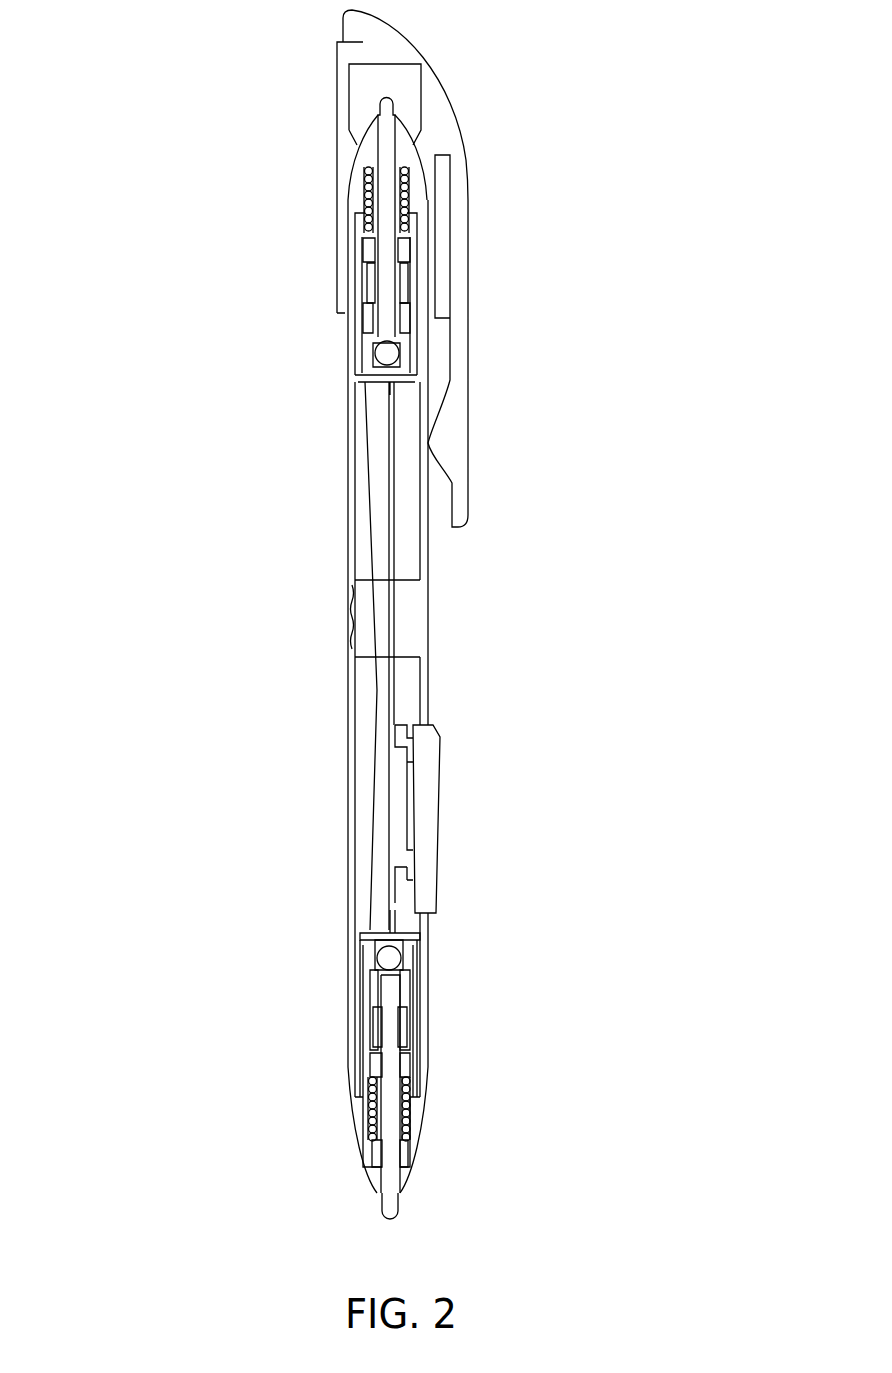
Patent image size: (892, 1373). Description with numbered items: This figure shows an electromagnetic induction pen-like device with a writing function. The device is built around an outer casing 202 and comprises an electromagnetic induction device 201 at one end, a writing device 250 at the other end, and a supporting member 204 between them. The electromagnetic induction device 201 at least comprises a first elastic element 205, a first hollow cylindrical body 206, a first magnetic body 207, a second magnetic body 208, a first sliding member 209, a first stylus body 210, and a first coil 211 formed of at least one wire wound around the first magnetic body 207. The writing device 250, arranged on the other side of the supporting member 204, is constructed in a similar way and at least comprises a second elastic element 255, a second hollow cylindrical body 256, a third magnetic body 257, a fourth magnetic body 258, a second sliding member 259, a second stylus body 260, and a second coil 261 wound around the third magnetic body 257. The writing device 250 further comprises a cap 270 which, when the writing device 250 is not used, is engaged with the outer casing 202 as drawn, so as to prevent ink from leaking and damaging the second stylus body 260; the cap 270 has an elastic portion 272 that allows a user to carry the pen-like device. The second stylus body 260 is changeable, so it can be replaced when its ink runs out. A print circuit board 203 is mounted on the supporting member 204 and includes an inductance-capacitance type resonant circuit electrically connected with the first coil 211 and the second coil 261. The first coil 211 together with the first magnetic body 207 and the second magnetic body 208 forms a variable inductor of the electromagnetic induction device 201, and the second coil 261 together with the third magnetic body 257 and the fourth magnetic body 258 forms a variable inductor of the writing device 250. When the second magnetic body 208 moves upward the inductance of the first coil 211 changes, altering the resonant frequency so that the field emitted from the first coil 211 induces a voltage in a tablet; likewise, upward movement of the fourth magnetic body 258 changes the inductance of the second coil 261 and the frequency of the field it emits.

The electromagnetic induction device 201 is at (618, 953).
The outer casing 202 is at (348, 437).
The print circuit board 203 is at (395, 747).
The supporting member 204 is at (380, 823).
The first elastic element 205 is at (392, 962).
The first hollow cylindrical body 206 is at (415, 1023).
The first magnetic body 207 is at (403, 1152).
The second magnetic body 208 is at (405, 1040).
The first sliding member 209 is at (403, 980).
The first stylus body 210 is at (397, 1210).
The first coil 211 is at (413, 1113).
The writing device 250 is at (137, 93).
The second elastic element 255 is at (385, 353).
The second hollow cylindrical body 256 is at (365, 260).
The third magnetic body 257 is at (370, 157).
The fourth magnetic body 258 is at (373, 292).
The second sliding member 259 is at (372, 317).
The second stylus body 260 is at (383, 107).
The second coil 261 is at (367, 195).
The cap 270 is at (362, 40).
The elastic portion 272 is at (460, 230).